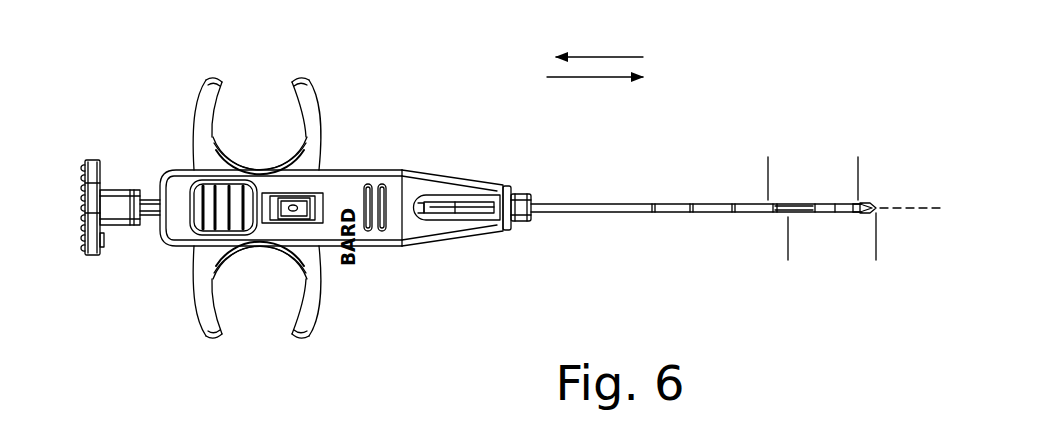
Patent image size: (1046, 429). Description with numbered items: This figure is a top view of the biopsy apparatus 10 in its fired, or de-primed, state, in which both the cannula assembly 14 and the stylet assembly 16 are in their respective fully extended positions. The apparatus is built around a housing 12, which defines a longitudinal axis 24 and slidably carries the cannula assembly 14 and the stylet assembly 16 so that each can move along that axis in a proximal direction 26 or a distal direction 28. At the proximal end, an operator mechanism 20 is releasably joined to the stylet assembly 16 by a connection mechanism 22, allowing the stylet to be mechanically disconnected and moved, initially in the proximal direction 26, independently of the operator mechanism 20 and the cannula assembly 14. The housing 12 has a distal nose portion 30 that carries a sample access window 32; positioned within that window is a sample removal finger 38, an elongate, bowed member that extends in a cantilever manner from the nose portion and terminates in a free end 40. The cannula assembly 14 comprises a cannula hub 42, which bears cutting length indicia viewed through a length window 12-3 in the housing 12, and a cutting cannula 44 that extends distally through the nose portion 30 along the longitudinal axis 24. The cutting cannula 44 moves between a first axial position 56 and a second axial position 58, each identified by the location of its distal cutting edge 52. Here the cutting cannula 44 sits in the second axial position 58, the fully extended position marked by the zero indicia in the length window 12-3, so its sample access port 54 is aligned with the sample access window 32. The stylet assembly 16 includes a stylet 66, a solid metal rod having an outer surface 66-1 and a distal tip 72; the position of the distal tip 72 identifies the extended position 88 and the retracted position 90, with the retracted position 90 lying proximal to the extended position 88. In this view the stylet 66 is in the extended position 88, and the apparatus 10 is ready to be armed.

The biopsy apparatus 10 is at (118, 97).
The housing 12 is at (268, 270).
The length window 12-3 is at (308, 198).
The cannula assembly 14 is at (655, 216).
The stylet assembly 16 is at (78, 207).
The operator mechanism 20 is at (128, 186).
The connection mechanism 22 is at (112, 242).
The longitudinal axis 24 is at (902, 206).
The proximal direction 26 is at (597, 57).
The distal direction 28 is at (580, 77).
The distal nose portion 30 is at (412, 248).
The sample access window 32 is at (450, 192).
The sample removal finger 38 is at (438, 208).
The free end 40 is at (455, 208).
The cannula hub 42 is at (287, 198).
The cutting cannula 44 is at (483, 213).
The distal cutting edge 52 is at (858, 215).
The sample access port 54 is at (470, 195).
The first axial position 56 is at (767, 170).
The second axial position 58 is at (857, 170).
The stylet 66 is at (860, 205).
The outer surface 66-1 is at (465, 213).
The distal tip 72 is at (865, 205).
The extended position 88 is at (877, 237).
The retracted position 90 is at (788, 237).